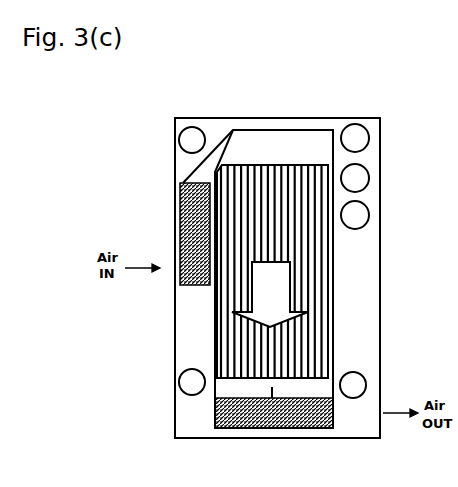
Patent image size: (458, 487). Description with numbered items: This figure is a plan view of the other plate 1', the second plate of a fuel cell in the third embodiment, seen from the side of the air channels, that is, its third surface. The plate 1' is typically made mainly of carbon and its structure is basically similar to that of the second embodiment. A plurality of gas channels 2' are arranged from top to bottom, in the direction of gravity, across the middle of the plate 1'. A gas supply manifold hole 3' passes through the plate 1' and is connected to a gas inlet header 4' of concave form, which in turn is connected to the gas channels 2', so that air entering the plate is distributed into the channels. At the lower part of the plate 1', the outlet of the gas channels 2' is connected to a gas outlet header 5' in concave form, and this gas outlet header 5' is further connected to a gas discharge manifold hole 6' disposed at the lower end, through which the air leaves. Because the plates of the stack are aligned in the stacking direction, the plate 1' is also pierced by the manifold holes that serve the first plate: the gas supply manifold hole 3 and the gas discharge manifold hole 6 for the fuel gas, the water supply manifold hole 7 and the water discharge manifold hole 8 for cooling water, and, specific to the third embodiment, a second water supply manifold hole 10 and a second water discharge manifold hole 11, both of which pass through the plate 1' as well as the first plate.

The other plate (second plate) 1' is at (315, 278).
The gas channels 2' is at (305, 279).
The gas supply manifold hole 3' is at (159, 234).
The gas inlet header 4' is at (294, 108).
The gas outlet header 5' is at (326, 271).
The gas discharge manifold hole 6' is at (252, 437).
The gas supply manifold hole 3 is at (382, 164).
The gas discharge manifold hole 6 is at (381, 378).
The water supply manifold hole 7 is at (190, 148).
The water discharge manifold hole 8 is at (186, 392).
The second water supply manifold hole 10 is at (362, 217).
The second water discharge manifold hole 11 is at (362, 142).